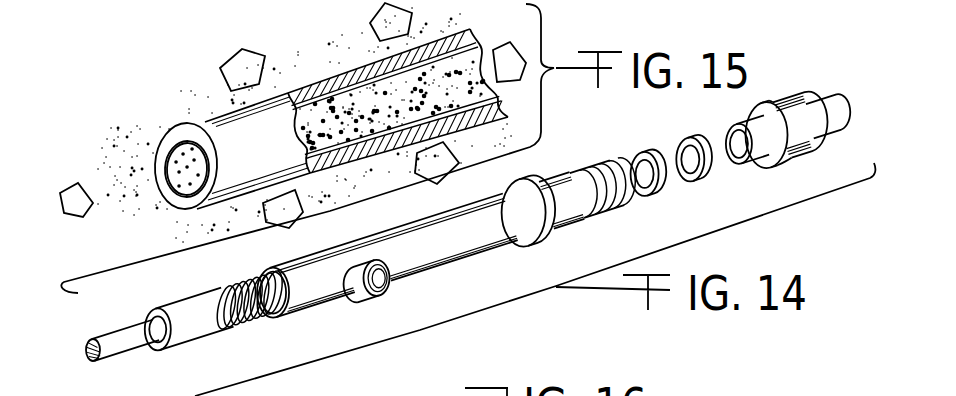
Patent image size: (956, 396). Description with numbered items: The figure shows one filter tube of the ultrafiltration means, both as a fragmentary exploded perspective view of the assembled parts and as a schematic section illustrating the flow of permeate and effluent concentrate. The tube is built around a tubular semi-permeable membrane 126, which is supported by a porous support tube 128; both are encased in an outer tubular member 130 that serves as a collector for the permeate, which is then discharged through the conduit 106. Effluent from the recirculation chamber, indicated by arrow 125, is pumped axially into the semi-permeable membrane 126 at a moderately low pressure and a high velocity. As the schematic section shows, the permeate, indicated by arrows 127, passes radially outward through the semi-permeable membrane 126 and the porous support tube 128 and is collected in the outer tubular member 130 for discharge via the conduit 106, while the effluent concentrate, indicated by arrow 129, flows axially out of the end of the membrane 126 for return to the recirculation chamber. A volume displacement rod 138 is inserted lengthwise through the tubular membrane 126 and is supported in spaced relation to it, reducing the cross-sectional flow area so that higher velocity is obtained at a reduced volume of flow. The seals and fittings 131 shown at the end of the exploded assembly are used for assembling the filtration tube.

In FIG. 14, the conduit 106 is at (393, 288).
In FIG. 15, the effluent arrow 125 is at (75, 213).
In FIG. 15, the semi-permeable membrane 126 is at (185, 210).
In FIG. 14, the semi-permeable membrane 126 is at (182, 331).
In FIG. 15, the permeate arrows 127 is at (370, 19).
In FIG. 15, the porous support tube 128 is at (208, 120).
In FIG. 14, the porous support tube 128 is at (263, 318).
In FIG. 15, the effluent concentrate arrow 129 is at (509, 43).
In FIG. 14, the outer tubular member 130 is at (327, 298).
In FIG. 14, the seals and fittings 131 is at (694, 182).
In FIG. 14, the volume displacement rod 138 is at (113, 345).